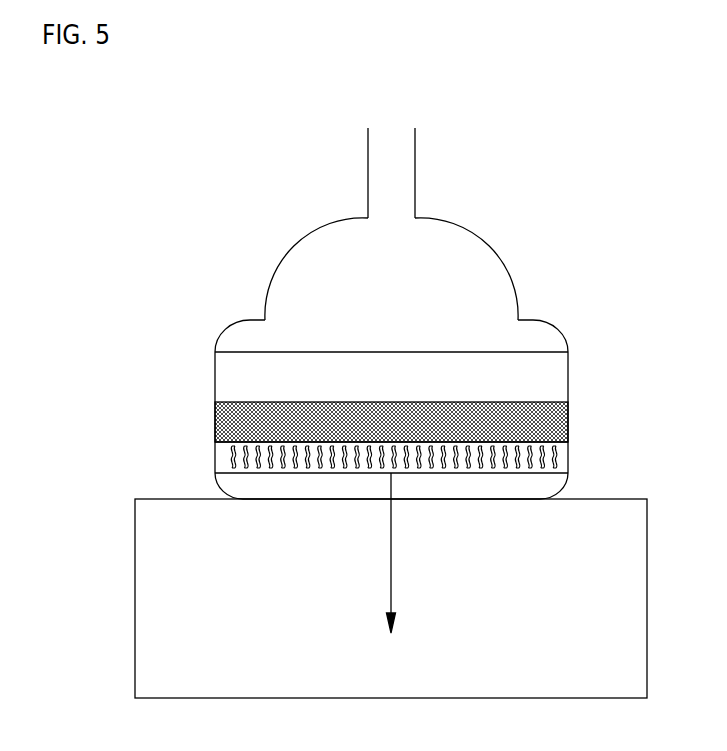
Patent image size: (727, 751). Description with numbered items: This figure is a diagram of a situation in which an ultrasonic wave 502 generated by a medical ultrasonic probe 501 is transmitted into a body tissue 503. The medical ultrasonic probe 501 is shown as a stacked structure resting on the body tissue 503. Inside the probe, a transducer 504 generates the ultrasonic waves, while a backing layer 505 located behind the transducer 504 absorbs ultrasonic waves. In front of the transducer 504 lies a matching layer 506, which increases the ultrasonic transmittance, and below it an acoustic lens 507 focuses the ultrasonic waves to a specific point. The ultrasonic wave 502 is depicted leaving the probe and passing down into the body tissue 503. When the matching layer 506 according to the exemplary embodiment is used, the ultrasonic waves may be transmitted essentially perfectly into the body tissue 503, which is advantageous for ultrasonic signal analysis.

The medical ultrasonic probe 501 is at (297, 240).
The ultrasonic wave 502 is at (391, 586).
The body tissue 503 is at (145, 586).
The transducer 504 is at (213, 418).
The backing layer 505 is at (213, 369).
The matching layer 506 is at (213, 452).
The acoustic lens 507 is at (217, 490).